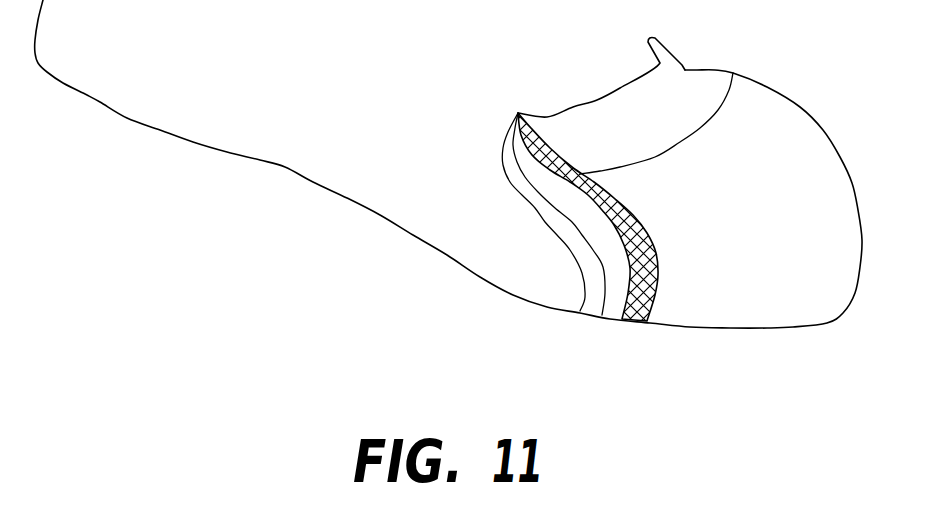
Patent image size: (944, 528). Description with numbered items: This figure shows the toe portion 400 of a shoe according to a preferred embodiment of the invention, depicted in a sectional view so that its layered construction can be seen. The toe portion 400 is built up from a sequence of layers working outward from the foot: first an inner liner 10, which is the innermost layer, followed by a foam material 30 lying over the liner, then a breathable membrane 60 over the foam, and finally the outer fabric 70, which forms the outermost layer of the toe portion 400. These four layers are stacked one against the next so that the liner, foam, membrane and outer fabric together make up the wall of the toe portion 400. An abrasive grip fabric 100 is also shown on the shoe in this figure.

The inner liner 10 is at (549, 202).
The foam material 30 is at (616, 299).
The breathable membrane 60 is at (657, 293).
The outer fabric 70 is at (768, 305).
The abrasive grip fabric 100 is at (683, 77).
The toe portion 400 is at (772, 90).